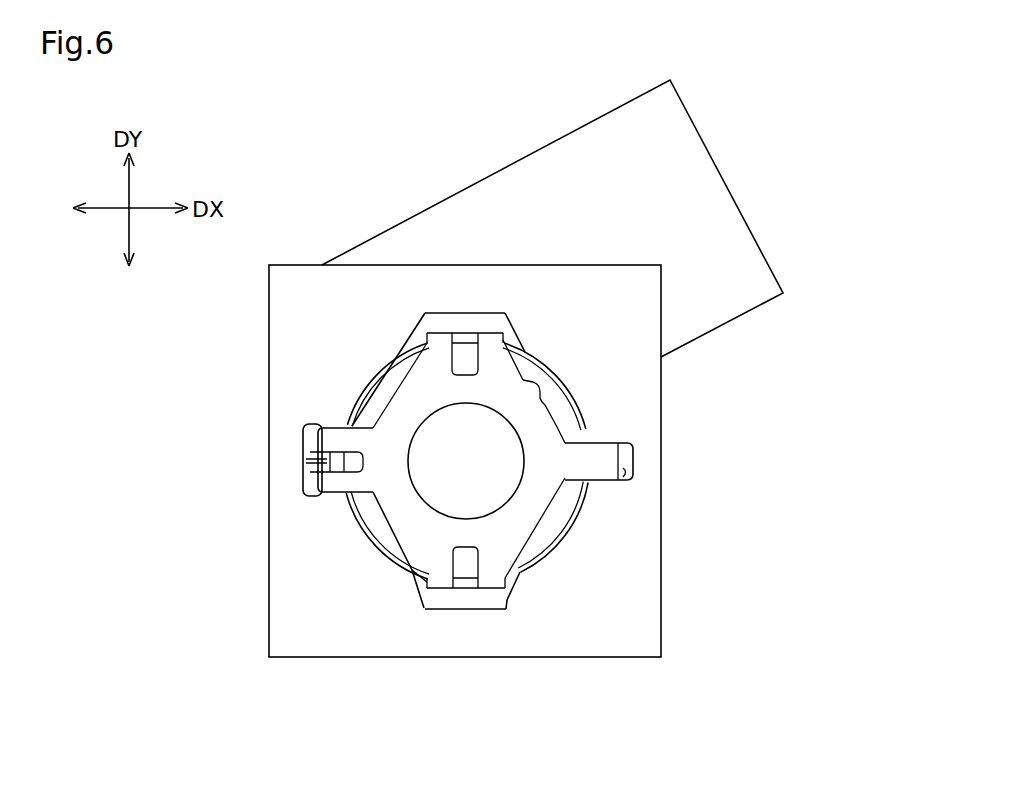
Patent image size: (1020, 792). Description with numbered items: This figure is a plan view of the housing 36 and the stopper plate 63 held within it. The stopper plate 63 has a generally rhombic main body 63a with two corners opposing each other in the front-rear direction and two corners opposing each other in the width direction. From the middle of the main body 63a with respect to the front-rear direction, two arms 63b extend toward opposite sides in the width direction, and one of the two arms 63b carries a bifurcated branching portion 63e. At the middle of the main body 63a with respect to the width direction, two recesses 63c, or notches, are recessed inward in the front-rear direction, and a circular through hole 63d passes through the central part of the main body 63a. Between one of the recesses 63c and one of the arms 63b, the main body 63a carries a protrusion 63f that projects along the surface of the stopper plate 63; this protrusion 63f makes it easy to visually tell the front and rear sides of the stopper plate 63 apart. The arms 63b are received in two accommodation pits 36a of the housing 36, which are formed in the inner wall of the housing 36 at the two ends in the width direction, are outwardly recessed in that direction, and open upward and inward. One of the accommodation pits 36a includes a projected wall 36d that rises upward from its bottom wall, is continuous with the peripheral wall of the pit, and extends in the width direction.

The housing 36 is at (268, 568).
The accommodation pit 36a is at (308, 498).
The projected wall 36d is at (308, 462).
The stopper plate 63 is at (523, 348).
The main body 63a is at (548, 363).
The arm 63b is at (303, 430).
The recess 63c is at (466, 372).
The through hole 63d is at (418, 436).
The branching portion 63e is at (347, 455).
The protrusion 63f is at (543, 383).